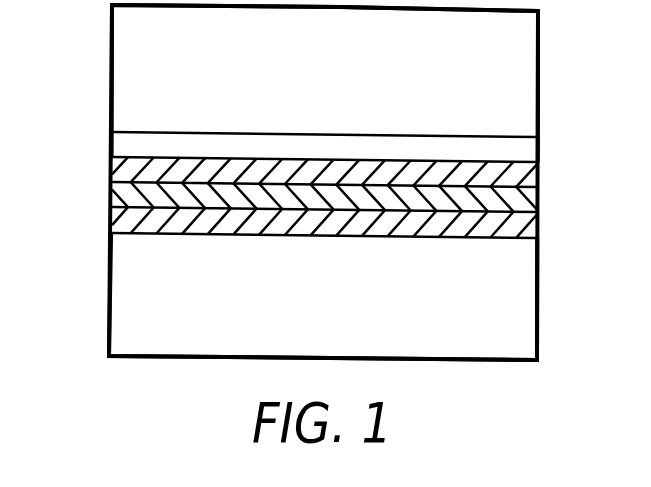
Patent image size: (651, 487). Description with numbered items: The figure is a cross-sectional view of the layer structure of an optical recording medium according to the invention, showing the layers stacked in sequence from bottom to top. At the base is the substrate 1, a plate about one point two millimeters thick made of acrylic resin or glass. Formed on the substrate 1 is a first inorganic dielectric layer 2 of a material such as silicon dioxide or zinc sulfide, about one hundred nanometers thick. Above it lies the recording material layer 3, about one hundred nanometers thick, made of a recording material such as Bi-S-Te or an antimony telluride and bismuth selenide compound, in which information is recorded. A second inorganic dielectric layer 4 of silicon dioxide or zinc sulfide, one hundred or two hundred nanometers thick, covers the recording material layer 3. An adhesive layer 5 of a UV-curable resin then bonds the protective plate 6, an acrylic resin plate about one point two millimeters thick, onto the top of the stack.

The substrate 1 is at (530, 293).
The inorganic dielectric layer 2 is at (530, 220).
The recording material layer 3 is at (530, 190).
The inorganic dielectric layer 4 is at (530, 165).
The adhesive layer 5 is at (530, 152).
The protective plate 6 is at (527, 72).